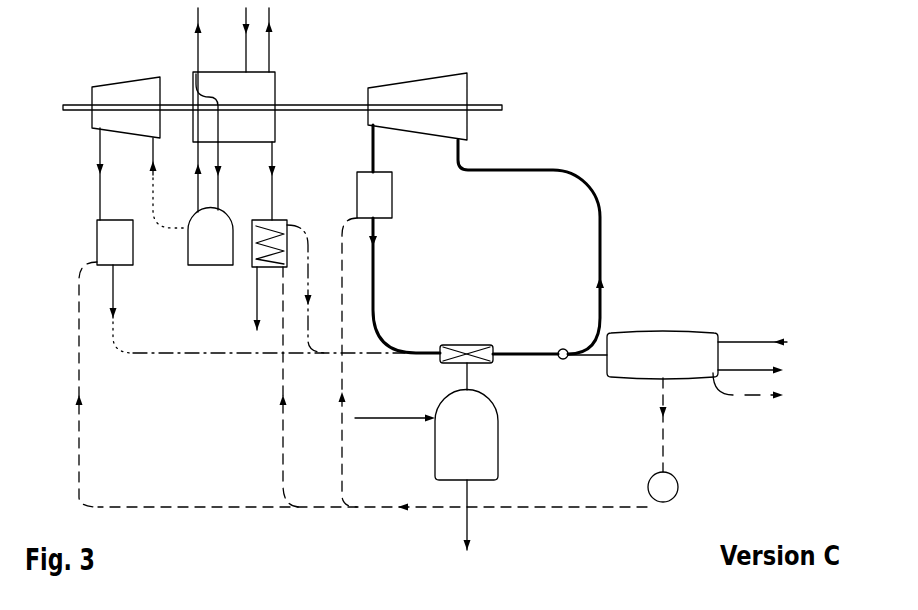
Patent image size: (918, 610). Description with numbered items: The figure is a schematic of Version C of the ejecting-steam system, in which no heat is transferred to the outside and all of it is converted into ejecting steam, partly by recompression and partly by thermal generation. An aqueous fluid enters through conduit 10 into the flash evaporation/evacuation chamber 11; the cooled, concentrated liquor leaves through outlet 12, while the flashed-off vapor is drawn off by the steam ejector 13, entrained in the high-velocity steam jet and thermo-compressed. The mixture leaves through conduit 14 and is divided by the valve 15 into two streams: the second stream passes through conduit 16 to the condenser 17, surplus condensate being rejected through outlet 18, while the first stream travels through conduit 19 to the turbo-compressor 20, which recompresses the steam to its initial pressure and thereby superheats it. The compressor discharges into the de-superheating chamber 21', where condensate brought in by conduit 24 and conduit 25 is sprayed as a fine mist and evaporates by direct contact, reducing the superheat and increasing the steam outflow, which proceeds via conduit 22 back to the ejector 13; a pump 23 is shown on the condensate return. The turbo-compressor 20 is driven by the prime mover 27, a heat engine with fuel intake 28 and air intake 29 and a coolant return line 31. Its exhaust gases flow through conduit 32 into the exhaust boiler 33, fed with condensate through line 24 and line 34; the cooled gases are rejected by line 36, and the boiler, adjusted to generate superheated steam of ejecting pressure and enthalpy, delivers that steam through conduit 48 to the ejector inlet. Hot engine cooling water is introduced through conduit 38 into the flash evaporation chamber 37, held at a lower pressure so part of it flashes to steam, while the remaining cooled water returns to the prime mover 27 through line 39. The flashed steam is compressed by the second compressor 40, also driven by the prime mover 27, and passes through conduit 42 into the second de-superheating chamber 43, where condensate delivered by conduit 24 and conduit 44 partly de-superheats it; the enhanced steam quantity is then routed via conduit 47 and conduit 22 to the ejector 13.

The conduit 10 is at (395, 410).
The flash evaporation/evacuation chamber 11 is at (466, 435).
The outlet 12 is at (480, 517).
The steam ejector 13 is at (466, 357).
The conduit 14 is at (525, 343).
The valve 15 is at (563, 342).
The conduit 16 is at (587, 365).
The condenser 17 is at (697, 355).
The outlet 18 is at (748, 393).
The conduit 19 is at (531, 247).
The turbo-compressor 20 is at (417, 106).
The de-superheating chamber 21' is at (389, 171).
The conduit 22 is at (404, 285).
The pump 23 is at (676, 487).
The condensate line 24 is at (393, 444).
The conduit 25 is at (352, 362).
The prime mover 27 is at (234, 107).
The fuel intake 28 is at (272, 39).
The air intake 29 is at (244, 39).
The coolant return line 31 is at (197, 74).
The exhaust conduit 32 is at (282, 181).
The exhaust boiler 33 is at (266, 234).
The condensate line 34 is at (293, 387).
The exhaust rejection line 36 is at (245, 298).
The flash evaporation chamber 37 is at (210, 237).
The conduit 38 is at (230, 176).
The coolant return line 39 is at (188, 177).
The second compressor 40 is at (126, 107).
The conduit 42 is at (112, 174).
The second de-superheating chamber 43 is at (142, 201).
The conduit 44 is at (91, 384).
The conduit 47 is at (258, 311).
The conduit 48 is at (310, 289).